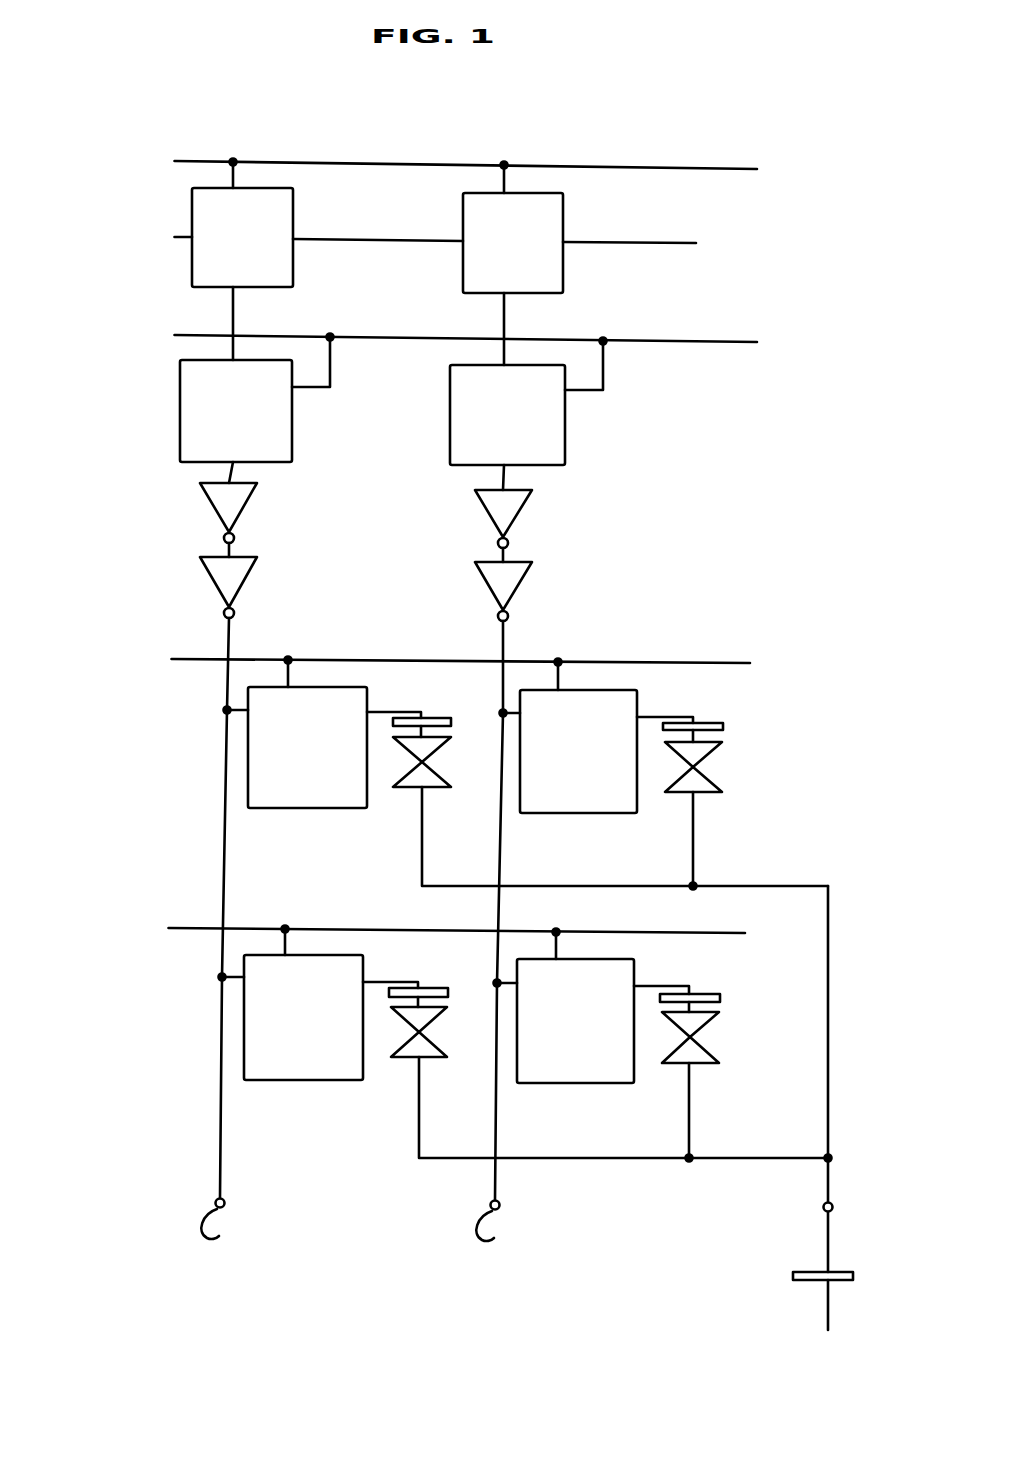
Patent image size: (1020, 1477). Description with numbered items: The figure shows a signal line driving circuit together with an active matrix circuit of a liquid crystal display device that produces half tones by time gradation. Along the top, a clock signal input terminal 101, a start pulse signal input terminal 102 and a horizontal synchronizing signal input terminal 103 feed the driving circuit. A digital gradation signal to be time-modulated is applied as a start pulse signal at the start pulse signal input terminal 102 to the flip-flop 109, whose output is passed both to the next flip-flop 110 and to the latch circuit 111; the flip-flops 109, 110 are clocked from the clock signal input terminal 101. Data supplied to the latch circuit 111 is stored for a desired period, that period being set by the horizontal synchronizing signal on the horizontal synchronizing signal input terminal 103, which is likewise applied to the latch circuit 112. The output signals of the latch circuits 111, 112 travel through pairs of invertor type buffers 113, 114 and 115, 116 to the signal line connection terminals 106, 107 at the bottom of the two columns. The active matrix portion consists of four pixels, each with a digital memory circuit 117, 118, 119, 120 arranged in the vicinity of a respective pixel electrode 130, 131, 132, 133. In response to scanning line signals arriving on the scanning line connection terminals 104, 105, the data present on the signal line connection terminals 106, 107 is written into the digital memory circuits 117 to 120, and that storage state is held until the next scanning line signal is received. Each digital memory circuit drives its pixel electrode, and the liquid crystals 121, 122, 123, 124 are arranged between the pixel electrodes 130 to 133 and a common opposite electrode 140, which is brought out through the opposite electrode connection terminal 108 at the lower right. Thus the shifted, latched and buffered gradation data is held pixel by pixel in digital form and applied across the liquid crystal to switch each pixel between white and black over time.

The clock signal input terminal 101 is at (166, 161).
The start pulse signal input terminal 102 is at (166, 237).
The horizontal synchronizing signal input terminal 103 is at (166, 335).
The scanning line connection terminal 104 is at (162, 659).
The scanning line connection terminal 105 is at (160, 928).
The signal line connection terminal 106 is at (237, 1223).
The signal line connection terminal 107 is at (511, 1226).
The opposite electrode connection terminal 108 is at (833, 1207).
The flip-flop 109 is at (293, 207).
The flip-flop 110 is at (563, 212).
The latch circuit 111 is at (292, 432).
The latch circuit 112 is at (565, 438).
The invertor type buffer 113 is at (250, 500).
The invertor type buffer 114 is at (250, 575).
The invertor type buffer 115 is at (525, 507).
The invertor type buffer 116 is at (525, 585).
The digital memory circuit 117 is at (367, 697).
The digital memory circuit 118 is at (363, 963).
The digital memory circuit 119 is at (637, 702).
The digital memory circuit 120 is at (634, 973).
The liquid crystal 121 is at (440, 787).
The liquid crystal 122 is at (430, 1057).
The liquid crystal 123 is at (700, 792).
The liquid crystal 124 is at (700, 1063).
The pixel electrode 130 is at (451, 722).
The pixel electrode 131 is at (723, 727).
The pixel electrode 132 is at (448, 992).
The pixel electrode 133 is at (720, 998).
The opposite electrode 140 is at (853, 1276).